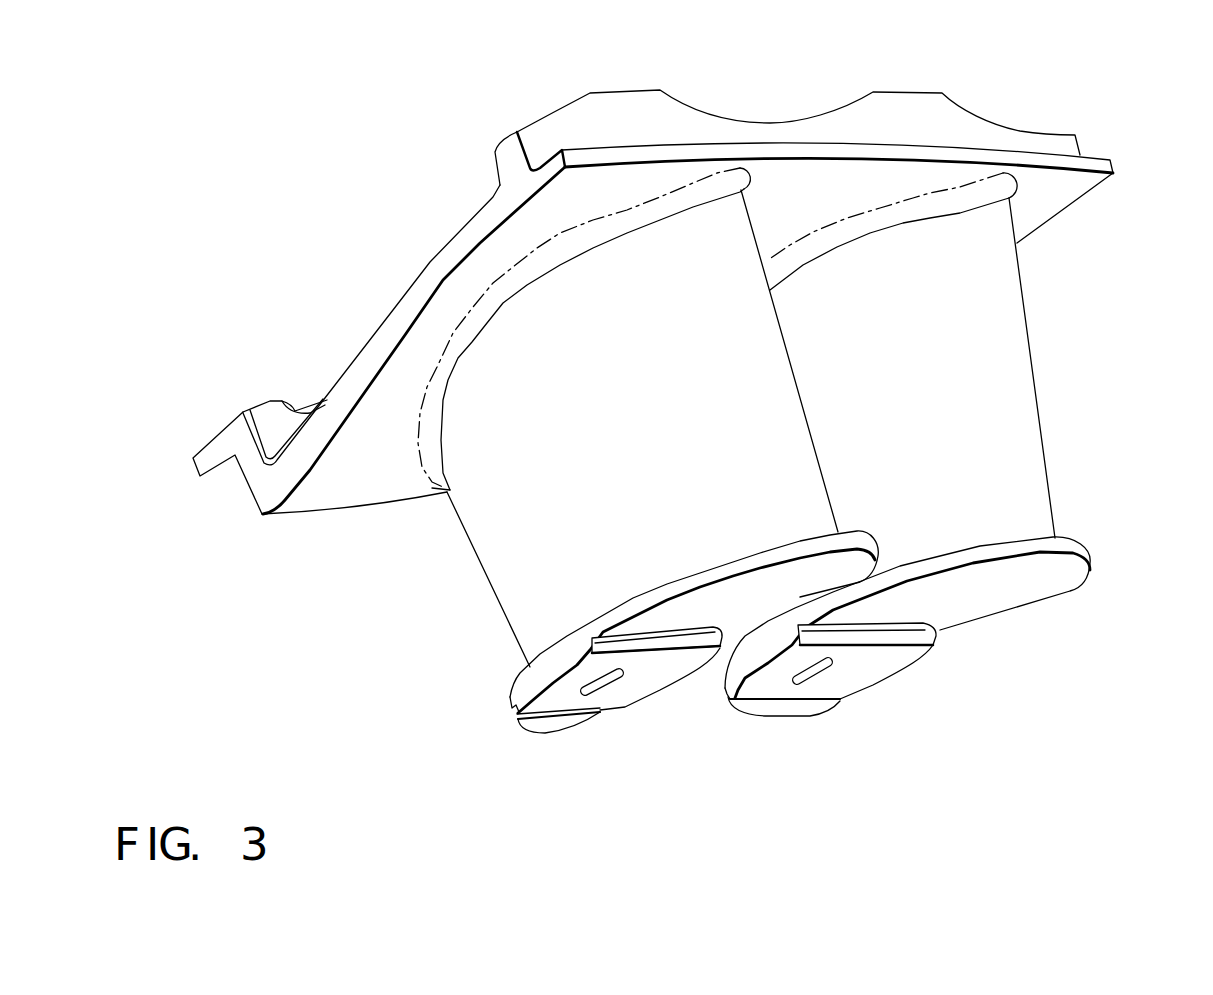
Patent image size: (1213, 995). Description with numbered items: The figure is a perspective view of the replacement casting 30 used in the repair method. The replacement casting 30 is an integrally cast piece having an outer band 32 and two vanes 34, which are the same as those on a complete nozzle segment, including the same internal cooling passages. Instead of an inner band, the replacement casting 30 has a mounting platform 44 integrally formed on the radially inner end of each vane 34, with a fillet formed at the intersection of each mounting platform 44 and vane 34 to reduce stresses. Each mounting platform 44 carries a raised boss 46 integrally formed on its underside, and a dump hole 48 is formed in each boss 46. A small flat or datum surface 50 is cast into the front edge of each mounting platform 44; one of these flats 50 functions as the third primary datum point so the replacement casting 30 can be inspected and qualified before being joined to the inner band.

The replacement casting 30 is at (692, 432).
The outer band 32 is at (467, 227).
The vane 34 is at (500, 568).
The mounting platform 44 is at (858, 530).
The raised boss 46 is at (560, 707).
The dump hole 48 is at (592, 693).
The datum surface 50 is at (550, 733).